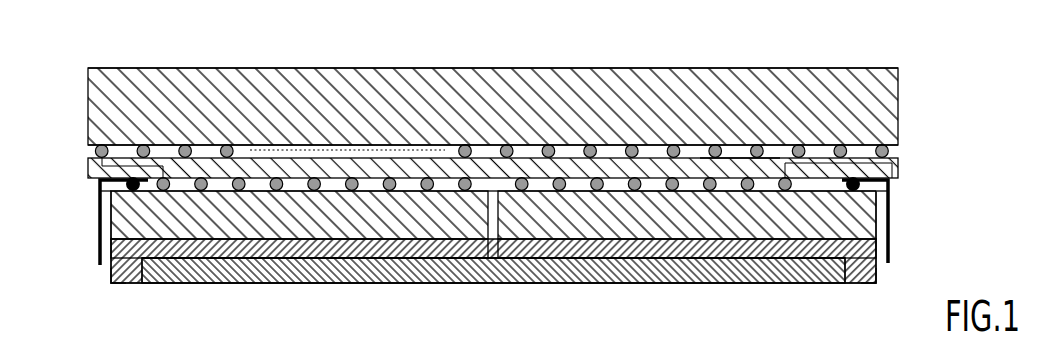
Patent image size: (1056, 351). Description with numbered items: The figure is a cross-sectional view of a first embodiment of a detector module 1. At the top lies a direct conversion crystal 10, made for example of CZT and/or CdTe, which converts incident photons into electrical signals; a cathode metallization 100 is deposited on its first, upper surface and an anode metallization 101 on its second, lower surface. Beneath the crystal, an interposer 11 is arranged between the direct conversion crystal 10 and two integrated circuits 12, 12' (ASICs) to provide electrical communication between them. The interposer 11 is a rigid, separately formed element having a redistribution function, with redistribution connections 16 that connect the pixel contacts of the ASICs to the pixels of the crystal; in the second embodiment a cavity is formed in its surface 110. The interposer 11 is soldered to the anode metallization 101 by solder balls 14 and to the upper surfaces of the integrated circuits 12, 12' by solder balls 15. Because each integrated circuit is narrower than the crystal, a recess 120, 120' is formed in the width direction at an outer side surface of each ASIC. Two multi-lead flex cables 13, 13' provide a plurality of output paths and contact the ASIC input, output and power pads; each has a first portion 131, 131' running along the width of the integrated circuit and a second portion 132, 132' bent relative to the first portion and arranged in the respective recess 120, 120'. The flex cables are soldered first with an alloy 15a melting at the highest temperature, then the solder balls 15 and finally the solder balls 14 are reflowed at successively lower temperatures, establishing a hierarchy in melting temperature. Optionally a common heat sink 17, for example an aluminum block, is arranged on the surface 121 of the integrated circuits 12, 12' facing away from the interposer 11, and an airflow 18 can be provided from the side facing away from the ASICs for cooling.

The detector module 1 is at (84, 65).
The direct conversion crystal 10 is at (898, 100).
The cathode metallization 100 is at (655, 68).
The anode metallization 101 is at (602, 145).
The solder balls 14 is at (96, 151).
The solder balls 15 is at (784, 178).
The alloy 15a is at (130, 178).
The redistribution connections 16 is at (738, 158).
The interposer 11 is at (898, 168).
The first portion 131 is at (92, 168).
The first portion 131' is at (879, 157).
The multi-lead flex cable 13 is at (88, 222).
The multi-lead flex cable 13' is at (903, 221).
The integrated circuit 12 is at (259, 215).
The integrated circuit 12' is at (730, 215).
The surface 110 is at (418, 190).
The second portion 132 is at (254, 248).
The second portion 132' is at (735, 247).
The common heat sink 17 is at (878, 270).
The airflow 18 is at (227, 277).
The surface 121 is at (292, 258).
The recess 120 is at (103, 303).
The recess 120' is at (887, 303).